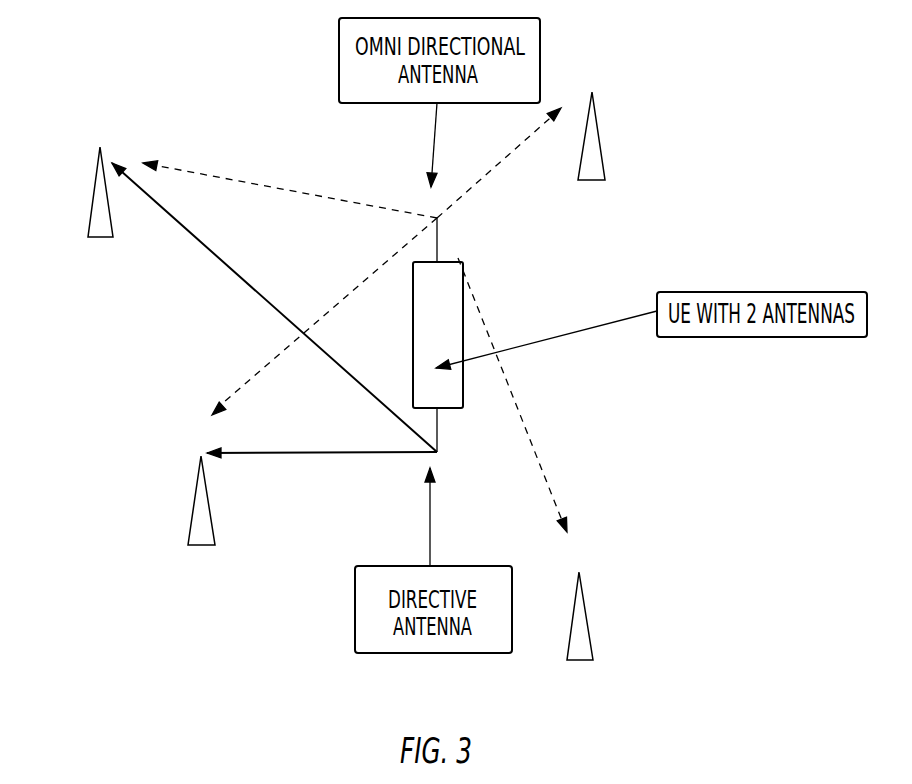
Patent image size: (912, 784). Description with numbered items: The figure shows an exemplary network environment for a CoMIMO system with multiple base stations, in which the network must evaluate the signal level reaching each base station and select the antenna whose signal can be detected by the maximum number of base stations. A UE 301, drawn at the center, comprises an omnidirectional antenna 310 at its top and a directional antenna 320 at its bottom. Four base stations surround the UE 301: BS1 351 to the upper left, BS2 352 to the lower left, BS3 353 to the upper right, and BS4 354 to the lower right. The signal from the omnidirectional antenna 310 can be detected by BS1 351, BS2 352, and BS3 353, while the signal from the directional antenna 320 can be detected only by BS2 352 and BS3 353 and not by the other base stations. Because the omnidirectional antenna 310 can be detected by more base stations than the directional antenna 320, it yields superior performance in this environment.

The UE 301 is at (452, 348).
The omnidirectional antenna 310 is at (437, 245).
The directional antenna 320 is at (437, 430).
The BS1 351 is at (92, 190).
The BS2 352 is at (208, 500).
The BS3 353 is at (600, 138).
The BS4 354 is at (588, 615).